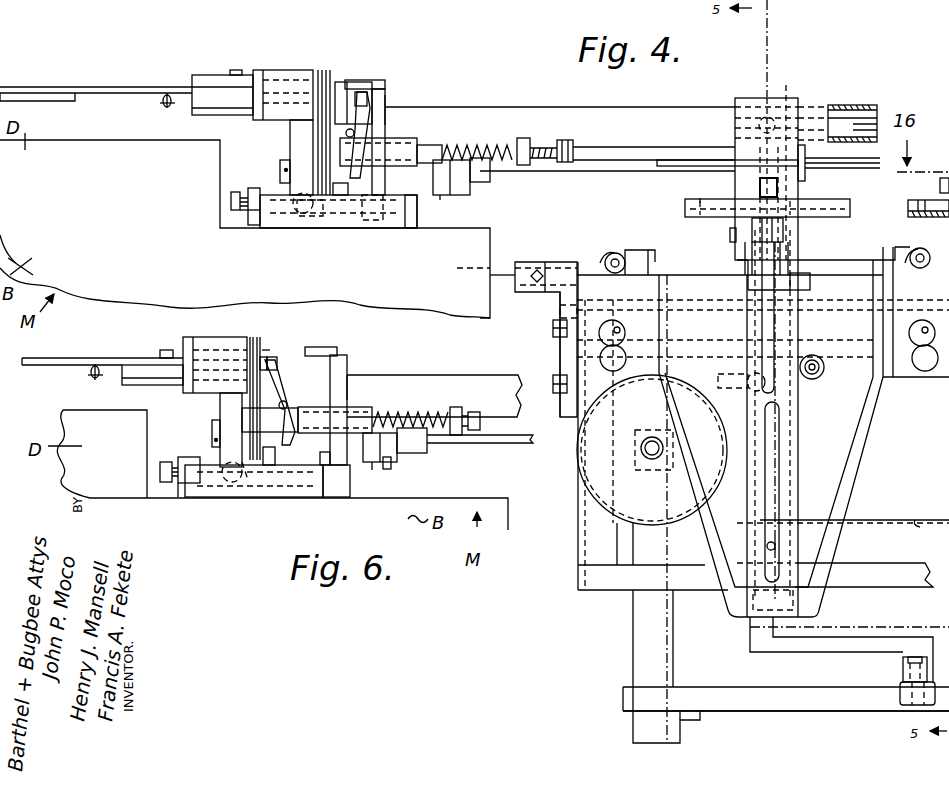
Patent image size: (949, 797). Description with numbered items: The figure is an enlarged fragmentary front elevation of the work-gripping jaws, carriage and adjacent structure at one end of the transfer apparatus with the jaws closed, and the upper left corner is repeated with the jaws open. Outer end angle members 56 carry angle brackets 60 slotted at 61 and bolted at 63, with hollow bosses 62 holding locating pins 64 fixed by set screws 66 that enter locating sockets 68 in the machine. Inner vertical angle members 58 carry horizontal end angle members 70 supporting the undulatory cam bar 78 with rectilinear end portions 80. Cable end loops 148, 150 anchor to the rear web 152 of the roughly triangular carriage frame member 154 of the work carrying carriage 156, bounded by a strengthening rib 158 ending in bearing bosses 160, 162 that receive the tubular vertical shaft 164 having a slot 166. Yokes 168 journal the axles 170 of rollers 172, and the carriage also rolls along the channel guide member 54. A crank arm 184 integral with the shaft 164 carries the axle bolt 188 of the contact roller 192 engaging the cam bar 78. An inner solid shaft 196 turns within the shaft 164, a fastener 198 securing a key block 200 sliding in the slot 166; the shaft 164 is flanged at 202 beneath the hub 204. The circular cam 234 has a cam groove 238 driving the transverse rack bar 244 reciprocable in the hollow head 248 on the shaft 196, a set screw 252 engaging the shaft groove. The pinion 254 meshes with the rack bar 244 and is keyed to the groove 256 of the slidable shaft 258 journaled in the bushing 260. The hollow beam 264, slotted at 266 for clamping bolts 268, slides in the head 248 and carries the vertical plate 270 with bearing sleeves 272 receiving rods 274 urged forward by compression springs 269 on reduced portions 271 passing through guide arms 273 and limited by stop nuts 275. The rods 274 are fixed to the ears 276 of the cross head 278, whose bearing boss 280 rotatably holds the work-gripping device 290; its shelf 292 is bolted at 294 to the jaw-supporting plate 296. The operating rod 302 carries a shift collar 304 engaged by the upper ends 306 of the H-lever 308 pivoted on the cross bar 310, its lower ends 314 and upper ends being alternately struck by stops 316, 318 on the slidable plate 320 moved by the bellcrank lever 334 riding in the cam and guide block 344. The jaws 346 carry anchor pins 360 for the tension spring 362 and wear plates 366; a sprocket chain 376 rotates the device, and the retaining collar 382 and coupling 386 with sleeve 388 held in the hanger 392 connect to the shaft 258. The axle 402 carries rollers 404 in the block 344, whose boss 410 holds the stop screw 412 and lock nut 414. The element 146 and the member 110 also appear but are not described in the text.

In FIG. 4, the inverted channel guide member 54 is at (905, 572).
In FIG. 4, the outer end angle member 56 is at (585, 548).
In FIG. 4, the inner end vertical angle member 58 is at (640, 660).
In FIG. 4, the angle bracket 60 is at (572, 262).
In FIG. 4, the vertical slot 61 is at (560, 305).
In FIG. 4, the hollow boss 62 is at (525, 262).
In FIG. 4, the bolt 63 is at (553, 380).
In FIG. 4, the locating pin 64 is at (502, 273).
In FIG. 4, the set screw 66 is at (538, 270).
In FIG. 4, the locating socket 68 is at (470, 272).
In FIG. 4, the horizontal end angle member 70 is at (690, 728).
In FIG. 4, the undulatory cam bar 78 is at (720, 685).
In FIG. 4, the rectilinear end portion 80 is at (815, 712).
In FIG. 4, the frame member 110 is at (931, 453).
In FIG. 4, the wheel 146 is at (598, 457).
In FIG. 4, the cable end loop 148 is at (748, 386).
In FIG. 4, the cable end loop 150 is at (826, 368).
In FIG. 4, the rear web 152 is at (860, 436).
In FIG. 4, the carriage frame member 154 is at (858, 470).
In FIG. 4, the work carrying carriage 156 is at (845, 493).
In FIG. 4, the peripheral strengthening rib 158 is at (866, 421).
In FIG. 4, the upper bearing boss 160 is at (810, 285).
In FIG. 4, the lower bearing boss 162 is at (760, 594).
In FIG. 4, the tubular vertical shaft 164 is at (792, 416).
In FIG. 4, the elongated vertical slot 166 is at (774, 460).
In FIG. 4, the ear or yoke 168 is at (638, 250).
In FIG. 4, the axle 170 is at (606, 260).
In FIG. 4, the roller 172 is at (758, 309).
In FIG. 4, the crank arm 184 is at (840, 655).
In FIG. 4, the axle bolt 188 is at (903, 668).
In FIG. 4, the outer contact roller 192 is at (900, 694).
In FIG. 4, the inner solid shaft 196 is at (760, 628).
In FIG. 4, the fastener 198 is at (766, 545).
In FIG. 4, the key block 200 is at (778, 542).
In FIG. 4, the flange 202 is at (742, 254).
In FIG. 4, the hub 204 is at (790, 230).
In FIG. 4, the circular cam 234 is at (683, 208).
In FIG. 4, the circular cam groove 238 is at (700, 198).
In FIG. 4, the transverse rack bar 244 is at (760, 190).
In FIG. 4, the hollow head 248 is at (748, 98).
In FIG. 4, the set screw 252 is at (730, 236).
In FIG. 4, the pinion 254 is at (794, 163).
In FIG. 4, the longitudinal groove 256 is at (684, 161).
In FIG. 4, the slidable shaft 258 is at (600, 172).
In FIG. 6, the slidable shaft 258 is at (481, 444).
In FIG. 4, the bearing bushing 260 is at (816, 152).
In FIG. 4, the hollow beam 264 is at (670, 107).
In FIG. 6, the hollow beam 264 is at (497, 378).
In FIG. 4, the longitudinal slot 266 is at (856, 105).
In FIG. 4, the clamping bolt 268 is at (764, 166).
In FIG. 4, the compression spring 269 is at (507, 145).
In FIG. 6, the compression spring 269 is at (430, 416).
In FIG. 4, the vertical plate 270 is at (388, 100).
In FIG. 6, the vertical plate 270 is at (350, 365).
In FIG. 4, the reduced diameter portion 271 is at (526, 140).
In FIG. 6, the reduced diameter portion 271 is at (453, 407).
In FIG. 4, the bearing sleeve 272 is at (423, 140).
In FIG. 6, the bearing sleeve 272 is at (368, 412).
In FIG. 4, the guide arm 273 is at (548, 168).
In FIG. 4, the parallel rod 274 is at (447, 141).
In FIG. 6, the parallel rod 274 is at (270, 420).
In FIG. 4, the stop nut 275 is at (565, 140).
In FIG. 4, the ear 276 is at (300, 147).
In FIG. 6, the ear 276 is at (225, 420).
In FIG. 4, the cross head 278 is at (305, 66).
In FIG. 6, the cross head 278 is at (236, 335).
In FIG. 4, the bearing boss 280 is at (279, 70).
In FIG. 6, the bearing boss 280 is at (200, 347).
In FIG. 4, the work-gripping device 290 is at (256, 66).
In FIG. 6, the work-gripping device 290 is at (232, 337).
In FIG. 4, the shelf 292 is at (209, 109).
In FIG. 6, the shelf 292 is at (135, 382).
In FIG. 4, the bolt 294 is at (236, 70).
In FIG. 6, the bolt 294 is at (167, 350).
In FIG. 4, the jaw-supporting plate 296 is at (202, 75).
In FIG. 6, the jaw-supporting plate 296 is at (135, 357).
In FIG. 4, the operating rod 302 is at (346, 82).
In FIG. 6, the operating rod 302 is at (220, 365).
In FIG. 6, the shift collar 304 is at (272, 352).
In FIG. 4, the upper end 306 is at (365, 96).
In FIG. 6, the upper end 306 is at (278, 362).
In FIG. 4, the rocking H-lever 308 is at (365, 115).
In FIG. 6, the rocking H-lever 308 is at (280, 375).
In FIG. 4, the cross bar 310 is at (349, 129).
In FIG. 6, the cross bar 310 is at (288, 405).
In FIG. 4, the lower end 314 is at (344, 188).
In FIG. 6, the lower end 314 is at (277, 456).
In FIG. 4, the upper stop 316 is at (363, 80).
In FIG. 6, the upper stop 316 is at (320, 347).
In FIG. 4, the lower stop 318 is at (366, 198).
In FIG. 6, the lower stop 318 is at (320, 456).
In FIG. 4, the vertically-slidable plate 320 is at (378, 90).
In FIG. 6, the vertically-slidable plate 320 is at (346, 360).
In FIG. 4, the bellcrank lever 334 is at (378, 187).
In FIG. 6, the bellcrank lever 334 is at (254, 481).
In FIG. 4, the combination cam and guide block 344 is at (420, 211).
In FIG. 6, the combination cam and guide block 344 is at (352, 489).
In FIG. 4, the work-gripping jaw 346 is at (148, 86).
In FIG. 6, the work-gripping jaw 346 is at (104, 357).
In FIG. 4, the anchor pin 360 is at (170, 107).
In FIG. 6, the anchor pin 360 is at (95, 381).
In FIG. 4, the tension spring 362 is at (162, 105).
In FIG. 6, the tension spring 362 is at (90, 375).
In FIG. 4, the wear plate 366 is at (40, 101).
In FIG. 4, the sprocket chain 376 is at (338, 90).
In FIG. 6, the sprocket chain 376 is at (264, 356).
In FIG. 4, the retaining collar 382 is at (282, 168).
In FIG. 6, the retaining collar 382 is at (212, 438).
In FIG. 4, the driving coupling 386 is at (474, 186).
In FIG. 6, the driving coupling 386 is at (420, 458).
In FIG. 4, the outer sleeve 388 is at (441, 193).
In FIG. 6, the outer sleeve 388 is at (370, 472).
In FIG. 4, the shaft hanger 392 is at (458, 193).
In FIG. 6, the shaft hanger 392 is at (390, 470).
In FIG. 4, the axle 402 is at (298, 215).
In FIG. 6, the axle 402 is at (230, 484).
In FIG. 4, the roller 404 is at (323, 216).
In FIG. 6, the roller 404 is at (248, 482).
In FIG. 4, the upstanding boss 410 is at (263, 188).
In FIG. 6, the upstanding boss 410 is at (190, 457).
In FIG. 4, the stop screw 412 is at (234, 192).
In FIG. 6, the stop screw 412 is at (165, 462).
In FIG. 4, the lock nut 414 is at (252, 226).
In FIG. 6, the lock nut 414 is at (181, 498).